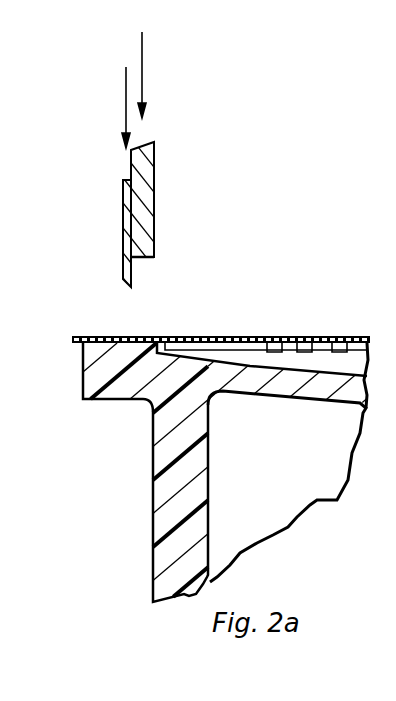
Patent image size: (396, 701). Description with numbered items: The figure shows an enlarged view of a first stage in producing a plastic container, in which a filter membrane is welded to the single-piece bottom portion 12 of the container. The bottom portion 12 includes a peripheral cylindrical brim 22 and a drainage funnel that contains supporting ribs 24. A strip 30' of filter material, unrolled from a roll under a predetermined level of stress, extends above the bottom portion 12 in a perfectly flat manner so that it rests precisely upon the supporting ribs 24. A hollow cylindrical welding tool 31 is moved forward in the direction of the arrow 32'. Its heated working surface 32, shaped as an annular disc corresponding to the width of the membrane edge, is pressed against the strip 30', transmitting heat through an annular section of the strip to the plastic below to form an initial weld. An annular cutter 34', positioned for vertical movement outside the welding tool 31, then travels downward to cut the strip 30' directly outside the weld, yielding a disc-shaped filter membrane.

The bottom portion 12 is at (322, 515).
The peripheral cylindrical brim 22 is at (172, 518).
The ribs 24 is at (320, 357).
The strip of filter material 30' is at (221, 314).
The hollow cylindrical welding tool 31 is at (154, 196).
The working surface 32 is at (168, 272).
The arrow 32' is at (161, 90).
The annular cutter 34' is at (111, 233).